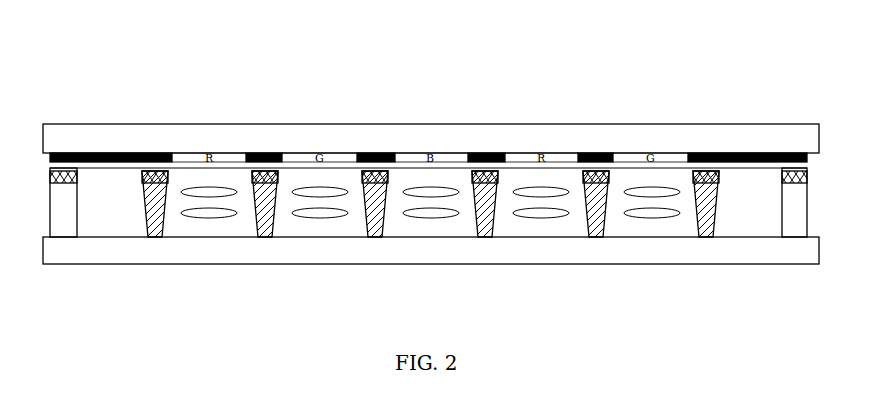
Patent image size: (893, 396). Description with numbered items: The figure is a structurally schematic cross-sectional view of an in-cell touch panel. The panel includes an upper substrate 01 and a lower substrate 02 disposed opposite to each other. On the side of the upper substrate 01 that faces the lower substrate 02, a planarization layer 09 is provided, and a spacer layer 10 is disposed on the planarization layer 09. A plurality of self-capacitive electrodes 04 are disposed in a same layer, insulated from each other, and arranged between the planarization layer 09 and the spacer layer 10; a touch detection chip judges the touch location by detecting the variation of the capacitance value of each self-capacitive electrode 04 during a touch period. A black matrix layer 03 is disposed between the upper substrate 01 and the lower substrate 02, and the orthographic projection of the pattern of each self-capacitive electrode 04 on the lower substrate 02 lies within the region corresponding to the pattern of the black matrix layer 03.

The upper substrate 01 is at (118, 133).
The lower substrate 02 is at (178, 253).
The black matrix layer 03 is at (270, 152).
The self-capacitive electrodes 04 is at (377, 170).
The planarization layer 09 is at (667, 168).
The spacer layer 10 is at (488, 230).